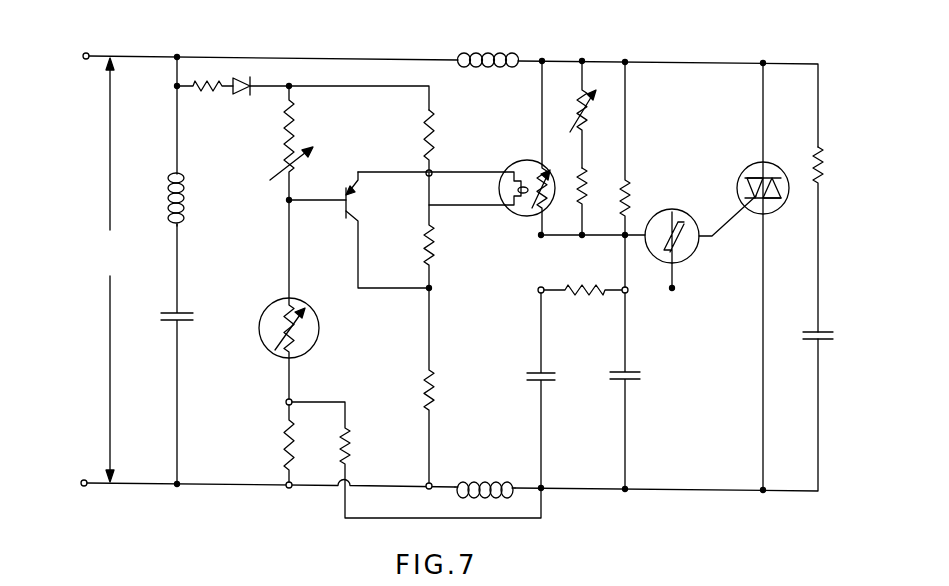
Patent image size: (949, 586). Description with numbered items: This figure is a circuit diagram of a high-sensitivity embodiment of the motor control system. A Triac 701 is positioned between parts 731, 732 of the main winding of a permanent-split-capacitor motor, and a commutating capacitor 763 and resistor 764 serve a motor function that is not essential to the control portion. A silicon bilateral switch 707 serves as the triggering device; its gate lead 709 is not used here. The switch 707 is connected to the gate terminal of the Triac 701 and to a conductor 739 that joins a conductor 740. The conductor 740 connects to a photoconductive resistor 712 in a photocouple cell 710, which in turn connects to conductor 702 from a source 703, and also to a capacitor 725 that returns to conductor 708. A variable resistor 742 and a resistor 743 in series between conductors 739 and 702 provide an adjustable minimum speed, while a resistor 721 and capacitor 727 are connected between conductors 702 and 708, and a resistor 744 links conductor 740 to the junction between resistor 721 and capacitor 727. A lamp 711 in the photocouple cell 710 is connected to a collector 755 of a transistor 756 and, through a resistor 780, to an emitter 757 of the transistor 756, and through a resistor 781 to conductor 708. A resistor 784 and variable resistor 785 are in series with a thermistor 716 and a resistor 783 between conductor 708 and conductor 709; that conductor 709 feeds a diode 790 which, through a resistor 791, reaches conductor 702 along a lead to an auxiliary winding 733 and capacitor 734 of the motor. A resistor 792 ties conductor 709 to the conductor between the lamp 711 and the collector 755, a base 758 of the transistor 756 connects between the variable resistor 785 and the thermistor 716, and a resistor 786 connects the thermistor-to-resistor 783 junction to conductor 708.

The Triac 701 is at (742, 172).
The conductor 702 is at (266, 55).
The source 703 is at (103, 254).
The silicon bilateral switch (S.B.S.) 707 is at (690, 257).
The conductor 708 is at (232, 486).
The gate lead / conductor 709 is at (335, 88).
The photocouple cell 710 is at (508, 162).
The lamp 711 is at (507, 164).
The photoconductive resistor 712 is at (532, 162).
The thermistor 716 is at (322, 340).
The resistor 721 is at (631, 174).
The capacitor 725 is at (527, 378).
The capacitor 727 is at (632, 381).
The part of main winding 731 is at (500, 58).
The part of main winding 732 is at (478, 485).
The auxiliary winding 733 is at (184, 204).
The capacitor 734 is at (183, 311).
The conductor 739 is at (637, 218).
The conductor 740 is at (538, 266).
The variable resistor 742 is at (582, 114).
The resistor 743 is at (586, 176).
The resistor 744 is at (585, 302).
The collector 755 is at (360, 214).
The transistor 756 is at (364, 199).
The emitter 757 is at (363, 215).
The base 758 is at (343, 216).
The commutating capacitor 763 is at (820, 330).
The resistor 764 is at (821, 160).
The resistor 780 is at (425, 252).
The resistor 781 is at (438, 372).
The resistor 783 is at (283, 442).
The resistor 784 is at (300, 120).
The variable resistor 785 is at (300, 162).
The resistor 786 is at (352, 452).
The diode 790 is at (255, 96).
The resistor 791 is at (213, 96).
The resistor 792 is at (438, 130).